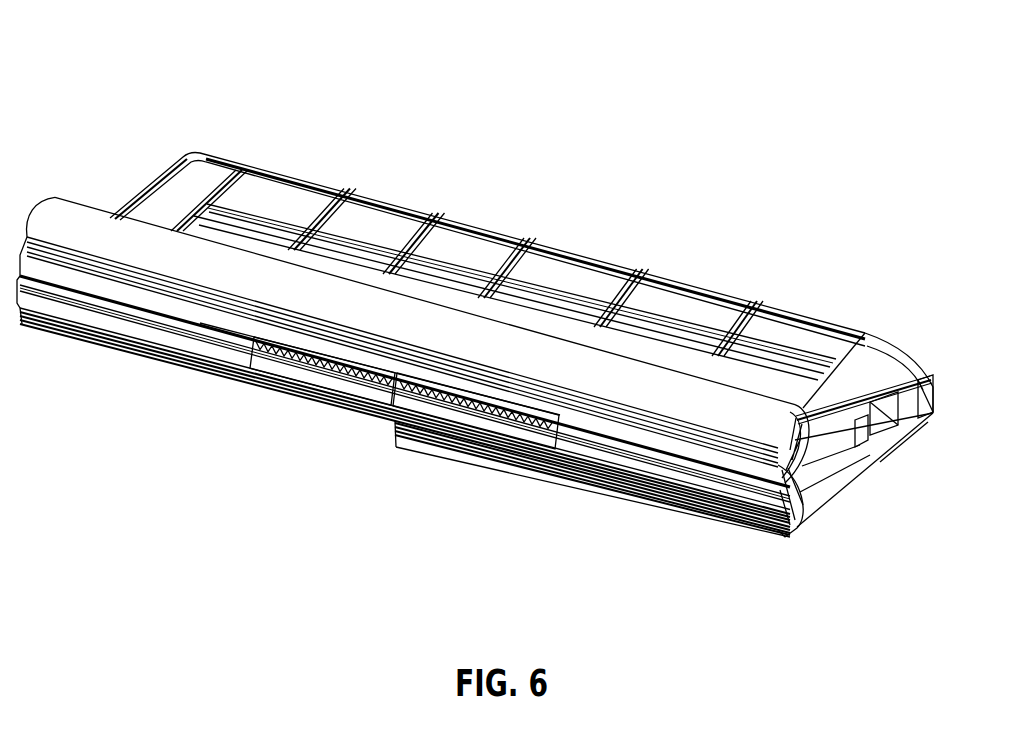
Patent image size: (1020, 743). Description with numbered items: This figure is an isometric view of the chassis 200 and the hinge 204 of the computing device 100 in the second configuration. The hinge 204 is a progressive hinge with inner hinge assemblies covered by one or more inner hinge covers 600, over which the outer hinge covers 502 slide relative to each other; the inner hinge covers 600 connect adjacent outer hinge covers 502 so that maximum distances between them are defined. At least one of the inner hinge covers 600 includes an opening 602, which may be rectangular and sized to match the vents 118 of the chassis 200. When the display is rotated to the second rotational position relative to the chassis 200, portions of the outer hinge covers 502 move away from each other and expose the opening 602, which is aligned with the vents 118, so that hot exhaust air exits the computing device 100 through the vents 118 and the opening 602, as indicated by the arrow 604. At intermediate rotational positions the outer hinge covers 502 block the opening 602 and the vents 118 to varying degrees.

The computing device 100 is at (475, 333).
The vents 118 is at (355, 378).
The chassis 200 is at (835, 425).
The hinge 204 is at (48, 337).
The outer hinge covers 502 is at (745, 425).
The inner hinge covers 600 is at (738, 485).
The opening 602 is at (250, 346).
The arrow 604 is at (530, 430).